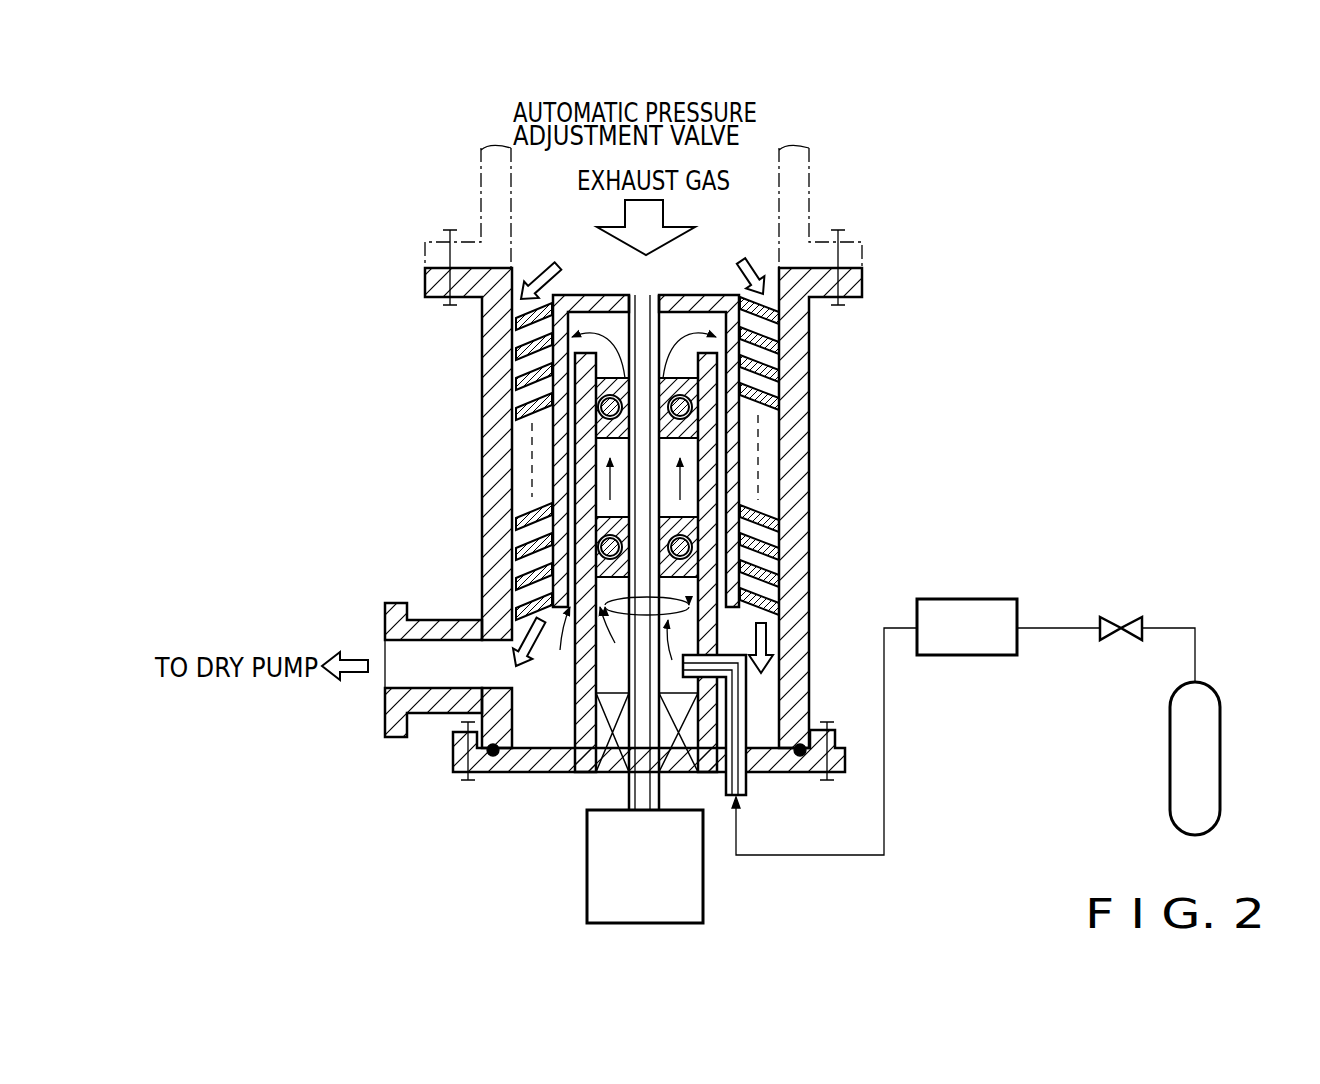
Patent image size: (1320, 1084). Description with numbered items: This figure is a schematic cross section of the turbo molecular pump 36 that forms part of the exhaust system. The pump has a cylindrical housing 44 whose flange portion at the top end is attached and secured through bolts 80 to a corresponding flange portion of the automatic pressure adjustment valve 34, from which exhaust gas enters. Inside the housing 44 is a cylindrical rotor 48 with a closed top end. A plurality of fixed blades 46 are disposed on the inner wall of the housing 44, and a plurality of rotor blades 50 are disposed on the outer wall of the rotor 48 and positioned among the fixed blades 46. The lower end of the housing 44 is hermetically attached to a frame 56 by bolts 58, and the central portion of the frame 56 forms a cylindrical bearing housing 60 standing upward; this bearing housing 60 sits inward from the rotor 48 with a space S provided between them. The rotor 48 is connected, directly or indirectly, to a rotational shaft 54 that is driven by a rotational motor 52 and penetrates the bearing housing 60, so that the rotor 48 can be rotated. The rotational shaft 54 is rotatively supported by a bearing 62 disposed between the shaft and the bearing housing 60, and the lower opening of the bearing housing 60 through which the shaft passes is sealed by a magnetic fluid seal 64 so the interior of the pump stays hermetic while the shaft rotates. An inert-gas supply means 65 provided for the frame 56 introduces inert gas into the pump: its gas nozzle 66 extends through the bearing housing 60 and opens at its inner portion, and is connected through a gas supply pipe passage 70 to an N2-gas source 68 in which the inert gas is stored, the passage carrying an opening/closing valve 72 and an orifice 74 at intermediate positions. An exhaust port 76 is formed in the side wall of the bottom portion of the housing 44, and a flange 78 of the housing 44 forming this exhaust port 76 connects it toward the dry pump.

The automatic pressure adjustment valve 34 is at (809, 162).
The turbo molecular pump 36 is at (900, 333).
The cylindrical housing 44 is at (795, 373).
The fixed blades 46 is at (758, 515).
The cylindrical rotor 48 is at (733, 437).
The rotor blades 50 is at (770, 548).
The rotational motor 52 is at (587, 882).
The rotational shaft 54 is at (629, 792).
The frame 56 is at (517, 762).
The bolts 58 is at (828, 782).
The bearing housing 60 is at (582, 492).
The bearing 62 is at (622, 378).
The magnetic fluid seal 64 is at (688, 765).
The inert-gas supply means 65 is at (1218, 680).
The gas nozzle 66 is at (747, 695).
The N2-gas source 68 is at (1212, 797).
The gas supply pipe passage 70 is at (1057, 628).
The opening/closing valve 72 is at (1126, 618).
The orifice 74 is at (976, 600).
The exhaust port 76 is at (490, 663).
The flange 78 is at (396, 735).
The bolts 80 is at (838, 230).
The space S is at (553, 420).